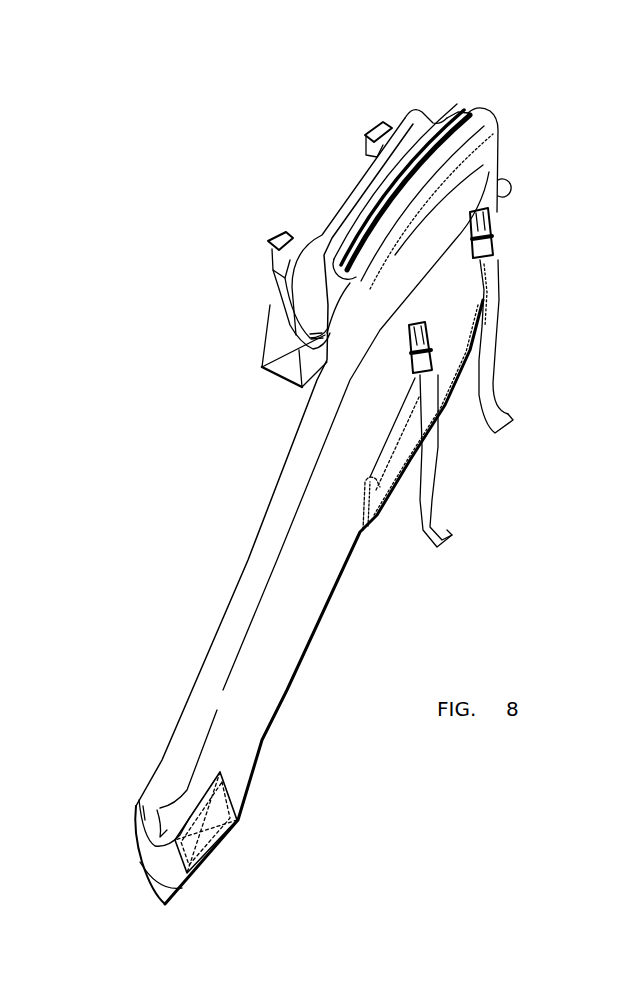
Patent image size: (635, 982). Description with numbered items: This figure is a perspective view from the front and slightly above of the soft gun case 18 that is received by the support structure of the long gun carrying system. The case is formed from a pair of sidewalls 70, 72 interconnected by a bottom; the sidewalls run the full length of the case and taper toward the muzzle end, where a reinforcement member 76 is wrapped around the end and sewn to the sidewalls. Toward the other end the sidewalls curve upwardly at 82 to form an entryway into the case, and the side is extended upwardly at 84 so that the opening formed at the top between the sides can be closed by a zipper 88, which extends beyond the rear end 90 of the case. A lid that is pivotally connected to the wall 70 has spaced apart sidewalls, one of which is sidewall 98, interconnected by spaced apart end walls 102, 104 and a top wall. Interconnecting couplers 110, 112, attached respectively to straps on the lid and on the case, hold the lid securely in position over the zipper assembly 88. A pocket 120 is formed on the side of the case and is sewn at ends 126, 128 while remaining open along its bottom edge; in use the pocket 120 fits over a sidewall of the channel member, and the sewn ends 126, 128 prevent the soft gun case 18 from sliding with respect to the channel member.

The soft gun case 18 is at (267, 432).
The sidewall 70 is at (223, 617).
The sidewall 72 is at (293, 643).
The reinforcement member 76 is at (212, 836).
The upwardly curved sidewall portion 82 is at (497, 135).
The upward extension of side 84 is at (367, 203).
The zipper 88 is at (467, 110).
The rear end 90 is at (483, 167).
The lid sidewall 98 is at (281, 312).
The lid end wall 102 is at (273, 335).
The lid end wall 104 is at (423, 112).
The interconnecting coupler 110 is at (372, 126).
The interconnecting coupler 112 is at (495, 222).
The pocket 120 is at (457, 392).
The sewn end of pocket 126 is at (380, 527).
The sewn end of pocket 128 is at (489, 298).